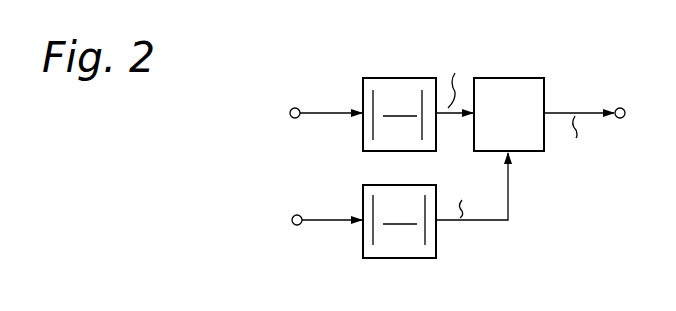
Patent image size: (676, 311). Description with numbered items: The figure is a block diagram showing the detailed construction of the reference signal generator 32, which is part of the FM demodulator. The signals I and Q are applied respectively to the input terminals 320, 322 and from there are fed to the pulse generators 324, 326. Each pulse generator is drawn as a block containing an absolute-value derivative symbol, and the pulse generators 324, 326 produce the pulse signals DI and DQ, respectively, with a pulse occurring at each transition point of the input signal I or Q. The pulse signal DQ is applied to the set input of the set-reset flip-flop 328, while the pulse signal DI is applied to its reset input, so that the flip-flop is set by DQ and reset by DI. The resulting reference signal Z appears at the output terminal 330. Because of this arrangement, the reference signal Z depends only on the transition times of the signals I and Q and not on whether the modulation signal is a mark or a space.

The reference signal generator 32 is at (262, 81).
The input terminal 320 is at (297, 212).
The input terminal 322 is at (294, 107).
The pulse generator 324 is at (408, 260).
The pulse generator 326 is at (393, 77).
The set-reset flip-flop 328 is at (512, 77).
The output terminal 330 is at (621, 107).